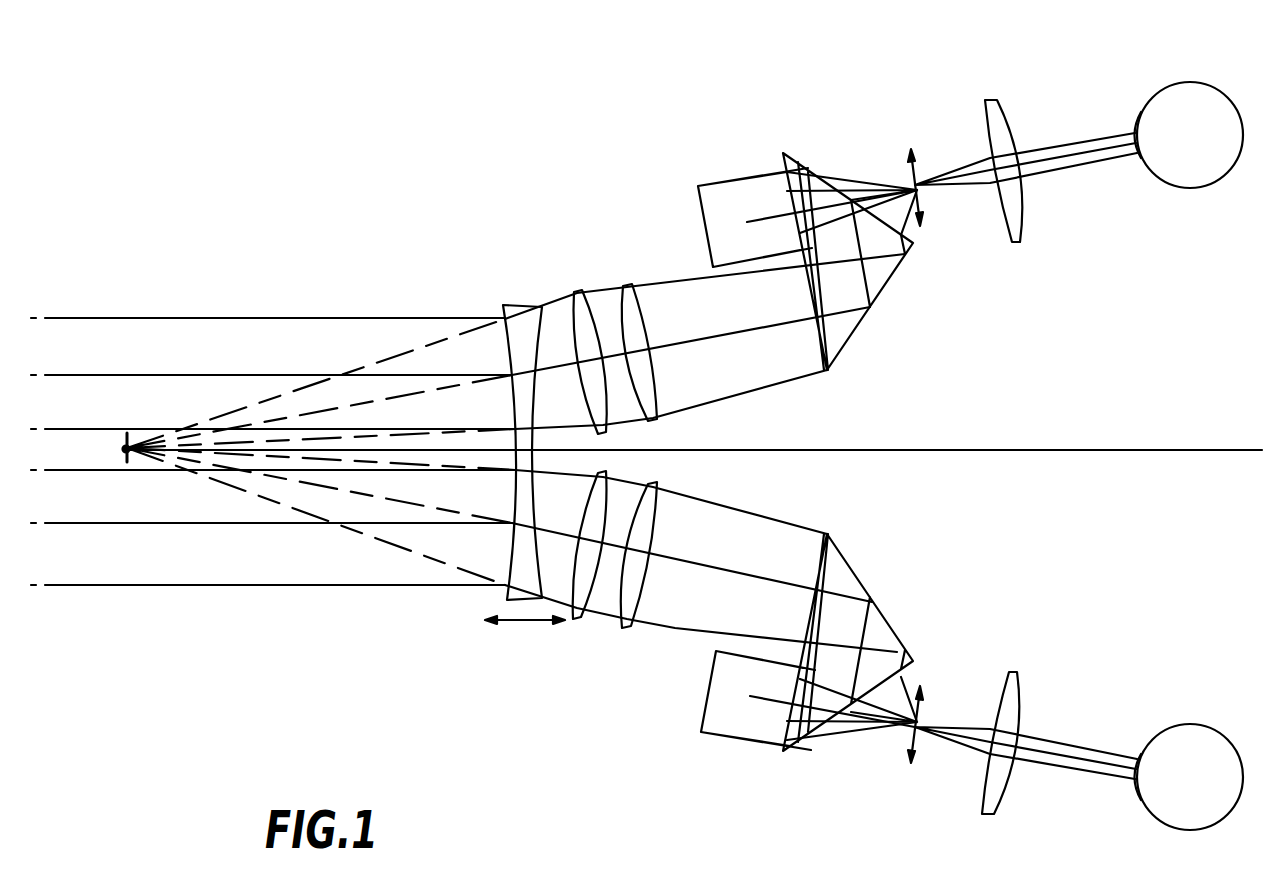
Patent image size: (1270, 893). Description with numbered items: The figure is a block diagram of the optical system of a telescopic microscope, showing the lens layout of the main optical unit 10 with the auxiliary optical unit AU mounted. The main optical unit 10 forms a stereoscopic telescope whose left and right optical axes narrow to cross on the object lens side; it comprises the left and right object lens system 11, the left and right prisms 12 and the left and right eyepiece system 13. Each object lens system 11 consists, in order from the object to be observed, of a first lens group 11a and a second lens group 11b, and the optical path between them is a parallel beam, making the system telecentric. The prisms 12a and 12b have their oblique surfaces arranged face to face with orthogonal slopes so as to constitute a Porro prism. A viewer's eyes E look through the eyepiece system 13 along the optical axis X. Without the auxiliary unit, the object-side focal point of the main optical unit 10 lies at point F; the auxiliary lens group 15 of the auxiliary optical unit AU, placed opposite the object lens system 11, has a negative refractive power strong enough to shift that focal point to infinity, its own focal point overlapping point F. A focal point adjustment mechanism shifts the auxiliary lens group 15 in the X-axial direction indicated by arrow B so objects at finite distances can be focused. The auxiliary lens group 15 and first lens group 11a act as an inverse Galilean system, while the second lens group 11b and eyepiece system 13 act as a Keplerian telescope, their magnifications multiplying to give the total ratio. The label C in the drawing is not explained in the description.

The main optical unit 10 is at (721, 455).
The object lens system 11 is at (592, 449).
The first lens group 11a is at (577, 289).
The second lens group 11b is at (627, 283).
The prisms 12 is at (807, 455).
The prism 12a is at (815, 170).
The prism 12b is at (853, 112).
The eyepiece system 13 is at (995, 100).
The auxiliary lens group 15 is at (503, 300).
The auxiliary optical unit AU is at (483, 409).
The arrow B is at (525, 642).
The intermediate image plane C is at (926, 456).
The eyes E is at (1152, 97).
The focal point F is at (118, 452).
The X-axis X is at (694, 435).